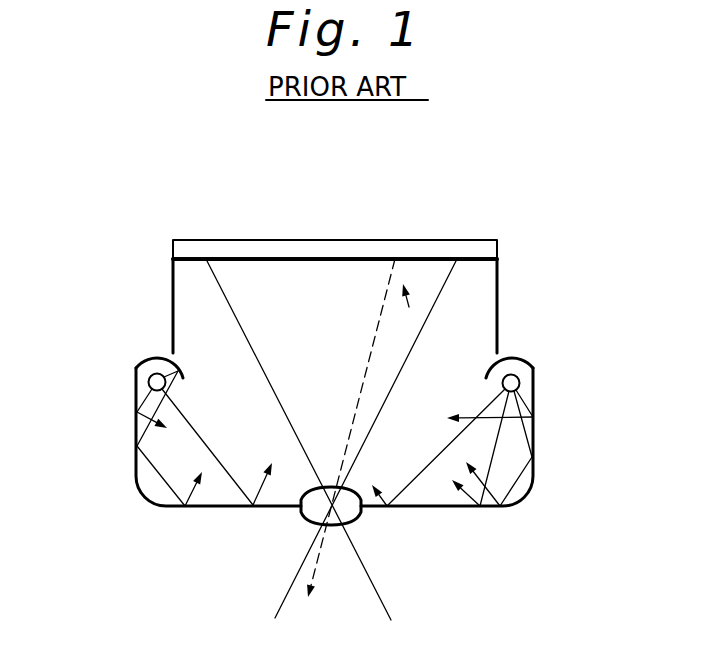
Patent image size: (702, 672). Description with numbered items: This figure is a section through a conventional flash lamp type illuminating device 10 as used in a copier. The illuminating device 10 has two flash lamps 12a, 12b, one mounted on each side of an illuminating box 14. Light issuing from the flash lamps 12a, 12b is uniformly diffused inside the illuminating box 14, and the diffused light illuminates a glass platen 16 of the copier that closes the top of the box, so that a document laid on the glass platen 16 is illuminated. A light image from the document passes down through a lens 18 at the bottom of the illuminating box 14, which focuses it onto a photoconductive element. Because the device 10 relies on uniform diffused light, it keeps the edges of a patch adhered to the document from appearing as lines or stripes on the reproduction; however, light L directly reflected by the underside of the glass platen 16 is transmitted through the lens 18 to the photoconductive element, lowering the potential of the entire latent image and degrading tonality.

The illuminating device 10 is at (538, 226).
The flash lamp 12a is at (148, 382).
The flash lamp 12b is at (520, 383).
The illuminating box 14 is at (497, 292).
The glass platen 16 is at (413, 241).
The lens 18 is at (360, 515).
The light L is at (318, 556).